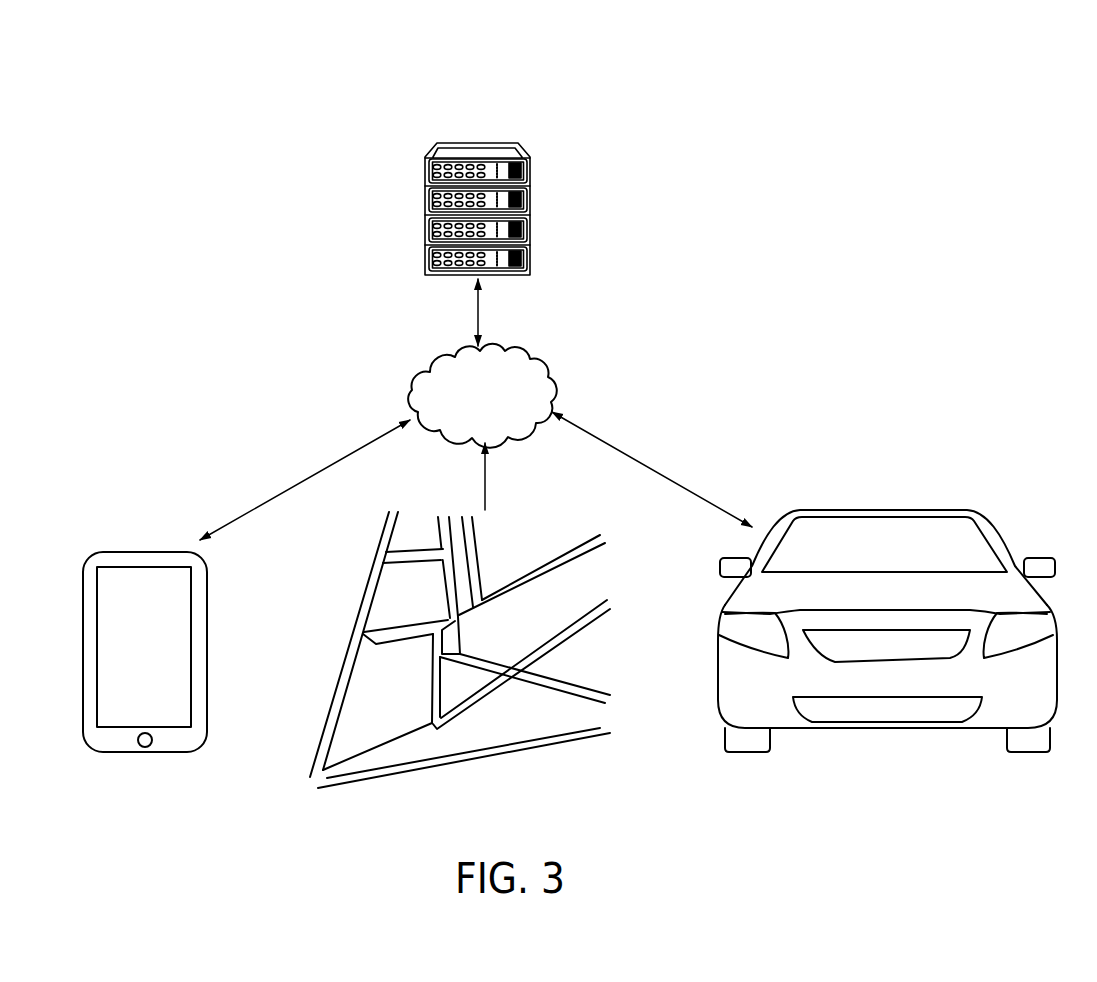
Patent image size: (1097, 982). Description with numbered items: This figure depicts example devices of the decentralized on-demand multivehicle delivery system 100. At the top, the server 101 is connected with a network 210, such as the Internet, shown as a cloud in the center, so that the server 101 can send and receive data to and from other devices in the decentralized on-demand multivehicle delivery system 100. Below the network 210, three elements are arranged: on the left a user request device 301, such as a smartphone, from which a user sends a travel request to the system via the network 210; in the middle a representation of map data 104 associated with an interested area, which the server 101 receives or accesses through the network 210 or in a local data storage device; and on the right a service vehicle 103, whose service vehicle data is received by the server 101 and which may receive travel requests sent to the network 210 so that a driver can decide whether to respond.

The decentralized on-demand multivehicle delivery system 100 is at (656, 129).
The server 101 is at (479, 143).
The network 210 is at (502, 408).
The user request device 301 is at (131, 752).
The map data 104 is at (468, 765).
The service vehicle 103 is at (890, 733).